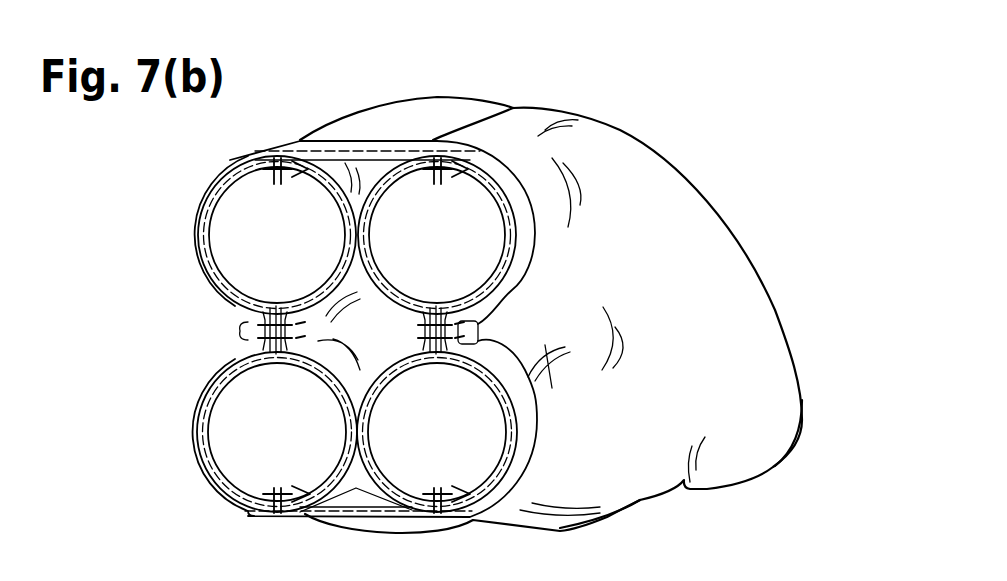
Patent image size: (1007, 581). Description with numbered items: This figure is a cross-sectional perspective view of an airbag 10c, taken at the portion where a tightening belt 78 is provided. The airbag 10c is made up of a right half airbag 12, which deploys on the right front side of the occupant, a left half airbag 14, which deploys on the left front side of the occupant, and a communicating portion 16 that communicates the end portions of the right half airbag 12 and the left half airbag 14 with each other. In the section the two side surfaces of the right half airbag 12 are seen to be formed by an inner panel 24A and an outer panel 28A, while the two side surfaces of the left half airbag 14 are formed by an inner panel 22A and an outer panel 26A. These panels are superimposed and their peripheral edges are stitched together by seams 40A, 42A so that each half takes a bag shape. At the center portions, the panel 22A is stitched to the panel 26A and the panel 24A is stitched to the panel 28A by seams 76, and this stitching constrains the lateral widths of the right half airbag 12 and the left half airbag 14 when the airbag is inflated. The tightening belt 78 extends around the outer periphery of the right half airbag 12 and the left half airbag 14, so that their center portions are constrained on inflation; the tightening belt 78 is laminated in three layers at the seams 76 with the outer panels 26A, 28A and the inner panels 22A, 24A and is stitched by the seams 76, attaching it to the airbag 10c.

The airbag 10c is at (740, 187).
The left half airbag 14 is at (384, 100).
The tightening belt 78 is at (343, 150).
The outer panel 28A is at (217, 268).
The outer panel 26A is at (505, 225).
The inner panel 24A is at (316, 365).
The inner panel 22A is at (386, 372).
The seams 76 is at (238, 331).
The seam 42A is at (302, 186).
The seam 40A is at (420, 182).
The communicating portion 16 is at (777, 462).
The right half airbag 12 is at (606, 520).